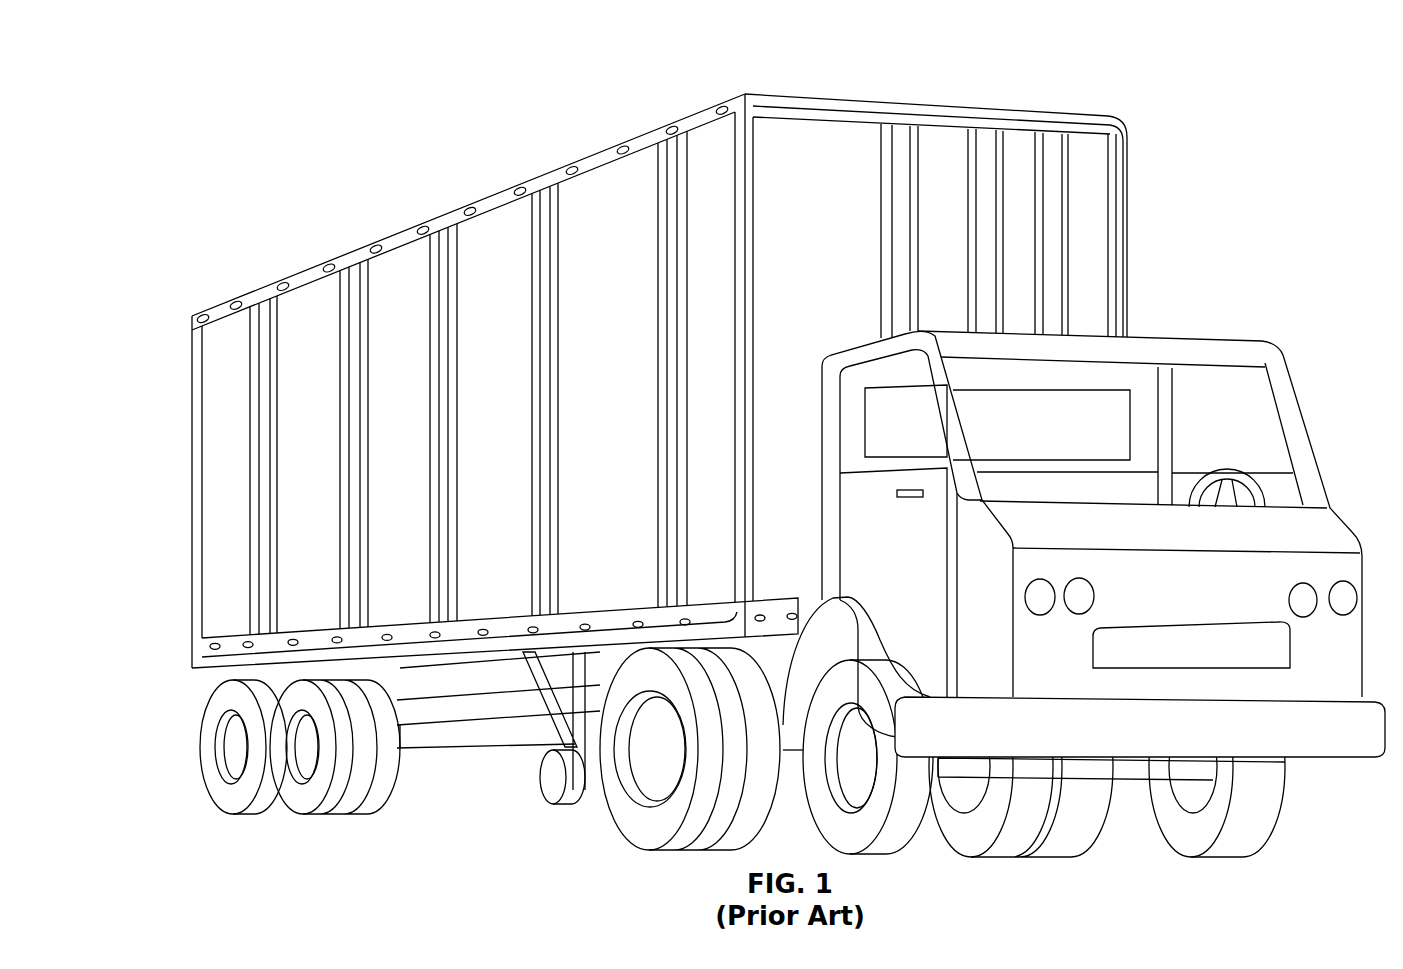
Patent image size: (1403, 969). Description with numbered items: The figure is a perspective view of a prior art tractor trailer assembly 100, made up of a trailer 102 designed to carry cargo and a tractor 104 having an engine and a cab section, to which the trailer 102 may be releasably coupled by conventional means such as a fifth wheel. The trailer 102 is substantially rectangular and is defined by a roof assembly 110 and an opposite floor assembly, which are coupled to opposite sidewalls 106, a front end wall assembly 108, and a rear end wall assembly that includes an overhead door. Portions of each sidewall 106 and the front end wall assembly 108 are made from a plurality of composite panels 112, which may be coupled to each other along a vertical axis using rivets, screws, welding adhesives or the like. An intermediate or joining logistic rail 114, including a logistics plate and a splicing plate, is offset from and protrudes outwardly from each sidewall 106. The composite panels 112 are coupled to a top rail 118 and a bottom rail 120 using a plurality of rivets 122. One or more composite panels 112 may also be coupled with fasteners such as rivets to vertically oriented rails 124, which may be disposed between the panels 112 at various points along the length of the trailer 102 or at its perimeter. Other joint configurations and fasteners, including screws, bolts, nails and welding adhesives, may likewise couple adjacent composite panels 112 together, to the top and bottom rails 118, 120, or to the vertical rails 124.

The tractor trailer assembly 100 is at (217, 117).
The trailer 102 is at (666, 90).
The tractor 104 is at (1283, 338).
The sidewall 106 is at (304, 476).
The front end wall assembly 108 is at (985, 155).
The roof assembly 110 is at (778, 93).
The composite panel 112 is at (393, 280).
The joining logistic rail 114 is at (442, 258).
The top rail 118 is at (628, 143).
The bottom rail 120 is at (216, 651).
The rivets 122 is at (262, 298).
The vertical rail 124 is at (196, 347).